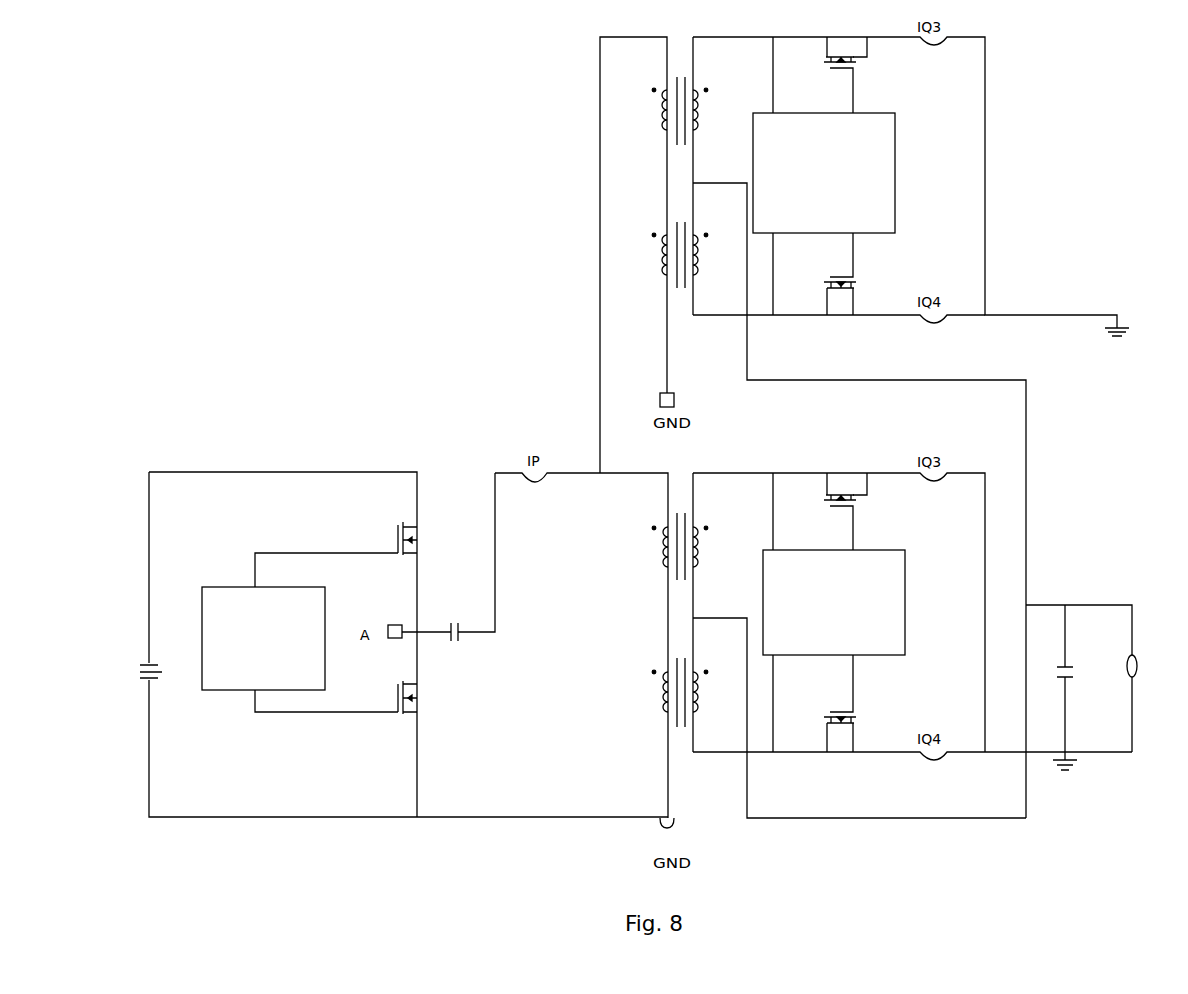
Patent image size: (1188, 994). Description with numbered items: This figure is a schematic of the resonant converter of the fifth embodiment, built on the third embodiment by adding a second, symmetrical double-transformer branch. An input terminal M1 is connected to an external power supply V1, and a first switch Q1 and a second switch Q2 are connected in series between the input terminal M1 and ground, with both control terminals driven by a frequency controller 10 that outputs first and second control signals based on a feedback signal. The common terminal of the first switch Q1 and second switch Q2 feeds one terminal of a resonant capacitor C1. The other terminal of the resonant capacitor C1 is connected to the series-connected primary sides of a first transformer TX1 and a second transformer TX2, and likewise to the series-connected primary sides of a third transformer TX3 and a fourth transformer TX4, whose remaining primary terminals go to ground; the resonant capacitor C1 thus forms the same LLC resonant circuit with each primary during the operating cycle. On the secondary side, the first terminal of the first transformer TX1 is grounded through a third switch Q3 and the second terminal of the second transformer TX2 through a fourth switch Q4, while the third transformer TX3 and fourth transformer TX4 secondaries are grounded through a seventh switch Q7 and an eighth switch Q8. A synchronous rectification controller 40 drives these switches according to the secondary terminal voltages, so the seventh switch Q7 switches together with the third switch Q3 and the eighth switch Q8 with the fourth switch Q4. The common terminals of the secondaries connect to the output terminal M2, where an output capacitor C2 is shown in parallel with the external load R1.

The frequency controller 10 is at (277, 587).
The synchronous rectification controller 40 is at (880, 113).
The input terminal M1 is at (407, 632).
The external power supply V1 is at (160, 661).
The first switch Q1 is at (397, 551).
The second switch Q2 is at (397, 712).
The resonant capacitor C1 is at (448, 571).
The first transformer TX1 is at (693, 542).
The second transformer TX2 is at (681, 687).
The third transformer TX3 is at (694, 106).
The fourth transformer TX4 is at (685, 246).
The third switch Q3 is at (828, 511).
The fourth switch Q4 is at (823, 703).
The seventh switch Q7 is at (829, 75).
The eighth switch Q8 is at (823, 274).
The output terminal M2 is at (1079, 666).
The output capacitor C2 is at (1078, 687).
The external load R1 is at (1146, 661).